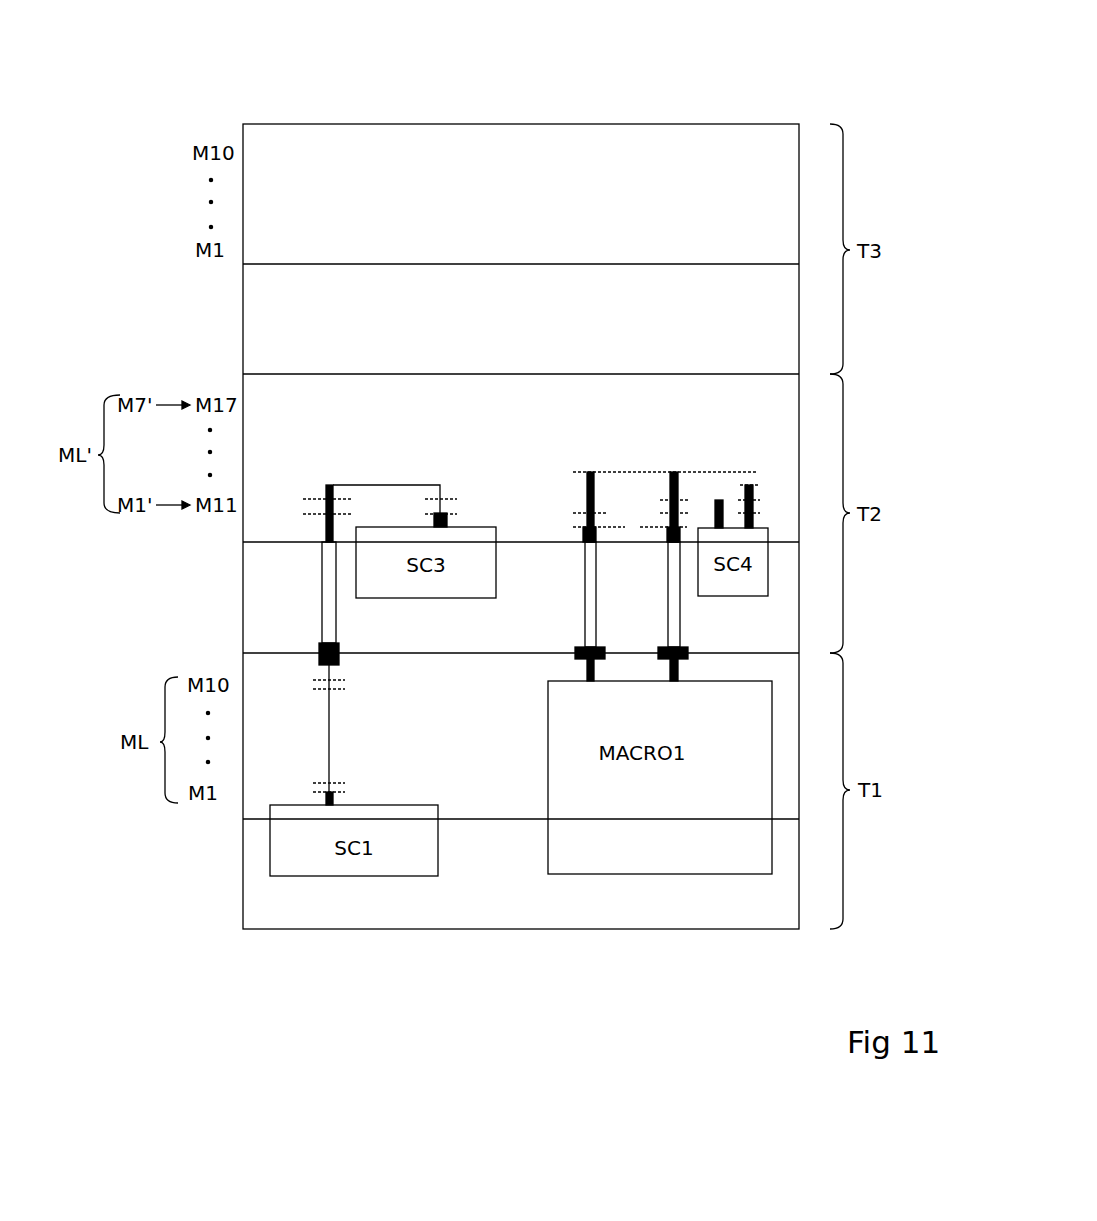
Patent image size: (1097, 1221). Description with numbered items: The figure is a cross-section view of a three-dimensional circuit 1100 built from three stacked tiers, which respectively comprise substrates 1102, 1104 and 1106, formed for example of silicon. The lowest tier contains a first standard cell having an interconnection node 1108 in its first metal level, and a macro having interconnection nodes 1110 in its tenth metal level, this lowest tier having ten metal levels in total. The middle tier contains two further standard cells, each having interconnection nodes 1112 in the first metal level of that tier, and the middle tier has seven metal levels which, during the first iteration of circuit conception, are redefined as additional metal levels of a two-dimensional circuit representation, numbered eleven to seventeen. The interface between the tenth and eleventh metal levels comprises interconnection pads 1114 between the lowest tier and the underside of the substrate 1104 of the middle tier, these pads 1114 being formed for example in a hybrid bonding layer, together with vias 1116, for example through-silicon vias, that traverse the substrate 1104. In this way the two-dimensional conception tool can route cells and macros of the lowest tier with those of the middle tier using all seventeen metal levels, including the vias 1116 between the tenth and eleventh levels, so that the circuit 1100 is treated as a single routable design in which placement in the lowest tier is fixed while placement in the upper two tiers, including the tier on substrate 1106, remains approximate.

The 3D circuit 1100 is at (856, 92).
The substrate 1102 is at (777, 898).
The substrate 1104 is at (777, 623).
The substrate 1106 is at (765, 320).
The interconnection node 1108 is at (336, 798).
The interconnection nodes 1110 is at (590, 683).
The interconnection nodes 1112 is at (447, 522).
The interconnection pads 1114 is at (339, 658).
The vias 1116 is at (330, 605).